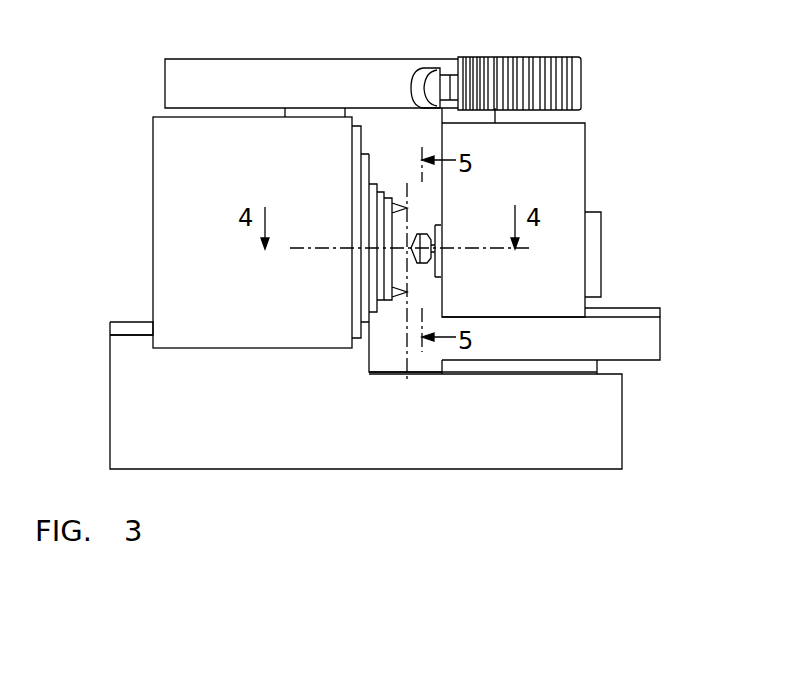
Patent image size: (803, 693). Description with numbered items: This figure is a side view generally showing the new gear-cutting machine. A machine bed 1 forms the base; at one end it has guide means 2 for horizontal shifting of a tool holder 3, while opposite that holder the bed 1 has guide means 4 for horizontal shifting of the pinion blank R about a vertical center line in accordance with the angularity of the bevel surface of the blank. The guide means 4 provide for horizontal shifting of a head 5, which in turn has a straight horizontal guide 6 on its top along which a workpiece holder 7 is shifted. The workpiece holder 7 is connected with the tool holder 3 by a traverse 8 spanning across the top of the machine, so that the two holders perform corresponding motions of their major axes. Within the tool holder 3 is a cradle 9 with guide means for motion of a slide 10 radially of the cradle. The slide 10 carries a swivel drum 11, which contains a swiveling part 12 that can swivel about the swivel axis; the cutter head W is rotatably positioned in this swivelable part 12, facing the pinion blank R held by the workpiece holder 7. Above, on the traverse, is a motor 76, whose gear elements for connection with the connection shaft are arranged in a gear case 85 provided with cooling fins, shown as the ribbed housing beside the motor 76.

The machine bed 1 is at (378, 447).
The guide means 2 is at (126, 322).
The tool holder 3 is at (165, 172).
The guide means 4 is at (592, 372).
The head 5 is at (648, 358).
The straight horizontal guide 6 is at (615, 313).
The workpiece holder 7 is at (585, 162).
The traverse 8 is at (194, 60).
The cradle 9 is at (357, 138).
The slide 10 is at (368, 158).
The swivel drum 11 is at (362, 198).
The swiveling part 12 is at (381, 192).
The motor 76 is at (440, 70).
The gear case 85 is at (540, 85).
The pinion blank R is at (437, 253).
The cutter head W is at (393, 296).